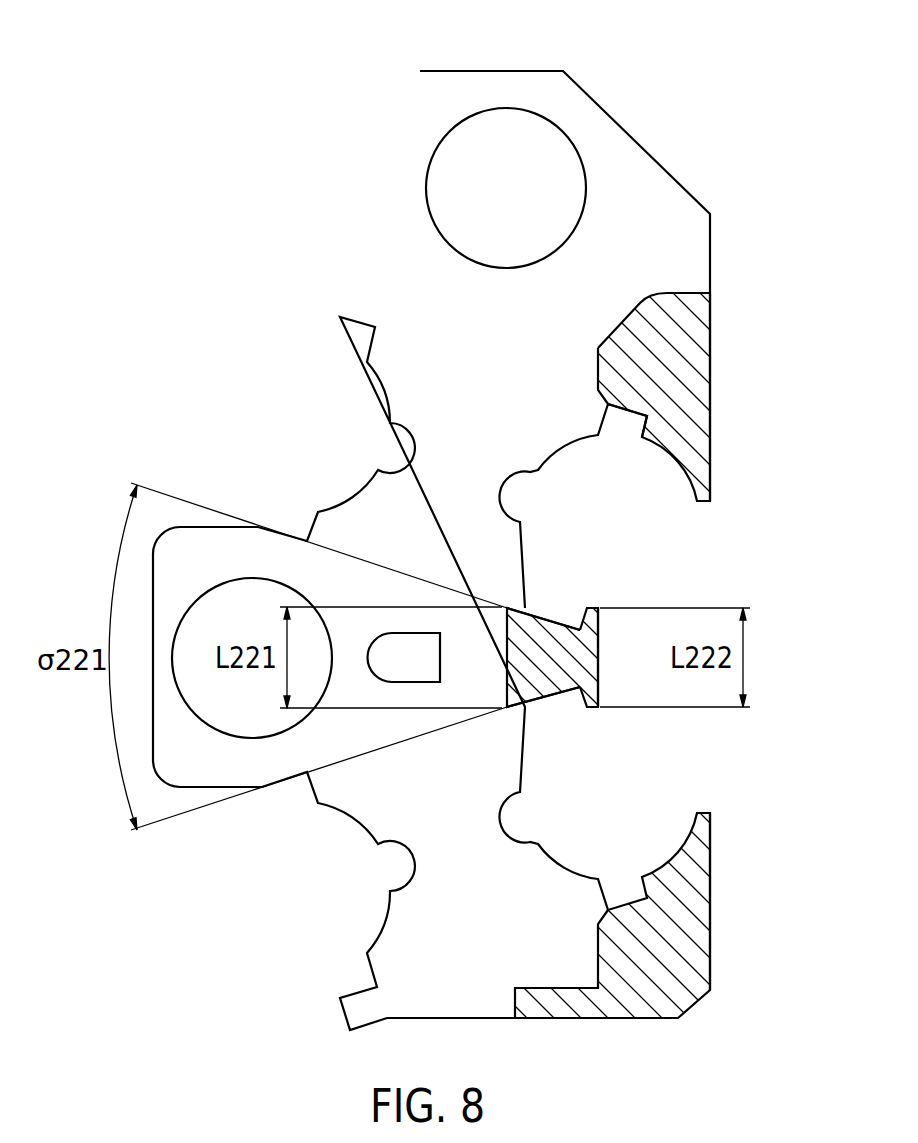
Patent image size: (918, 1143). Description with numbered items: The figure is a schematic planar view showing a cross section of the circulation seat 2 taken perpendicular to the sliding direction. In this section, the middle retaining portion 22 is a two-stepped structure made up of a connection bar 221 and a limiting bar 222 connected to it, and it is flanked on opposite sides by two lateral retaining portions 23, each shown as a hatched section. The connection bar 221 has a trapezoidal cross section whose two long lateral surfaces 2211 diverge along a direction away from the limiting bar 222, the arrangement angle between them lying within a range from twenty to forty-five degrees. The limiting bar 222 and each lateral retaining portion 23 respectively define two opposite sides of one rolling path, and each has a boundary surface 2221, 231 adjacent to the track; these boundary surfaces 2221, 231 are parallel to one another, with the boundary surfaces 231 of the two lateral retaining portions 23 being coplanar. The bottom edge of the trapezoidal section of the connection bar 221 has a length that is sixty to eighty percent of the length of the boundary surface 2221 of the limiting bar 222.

The circulation seat 2 is at (213, 62).
The middle retaining portion 22 is at (581, 680).
The connection bar 221 is at (547, 657).
The limiting bar 222 is at (590, 697).
The long lateral surfaces 2211 is at (558, 618).
The boundary surface 2221 is at (601, 633).
The lateral retaining portions 23 is at (704, 351).
The boundary surface 231 is at (711, 416).